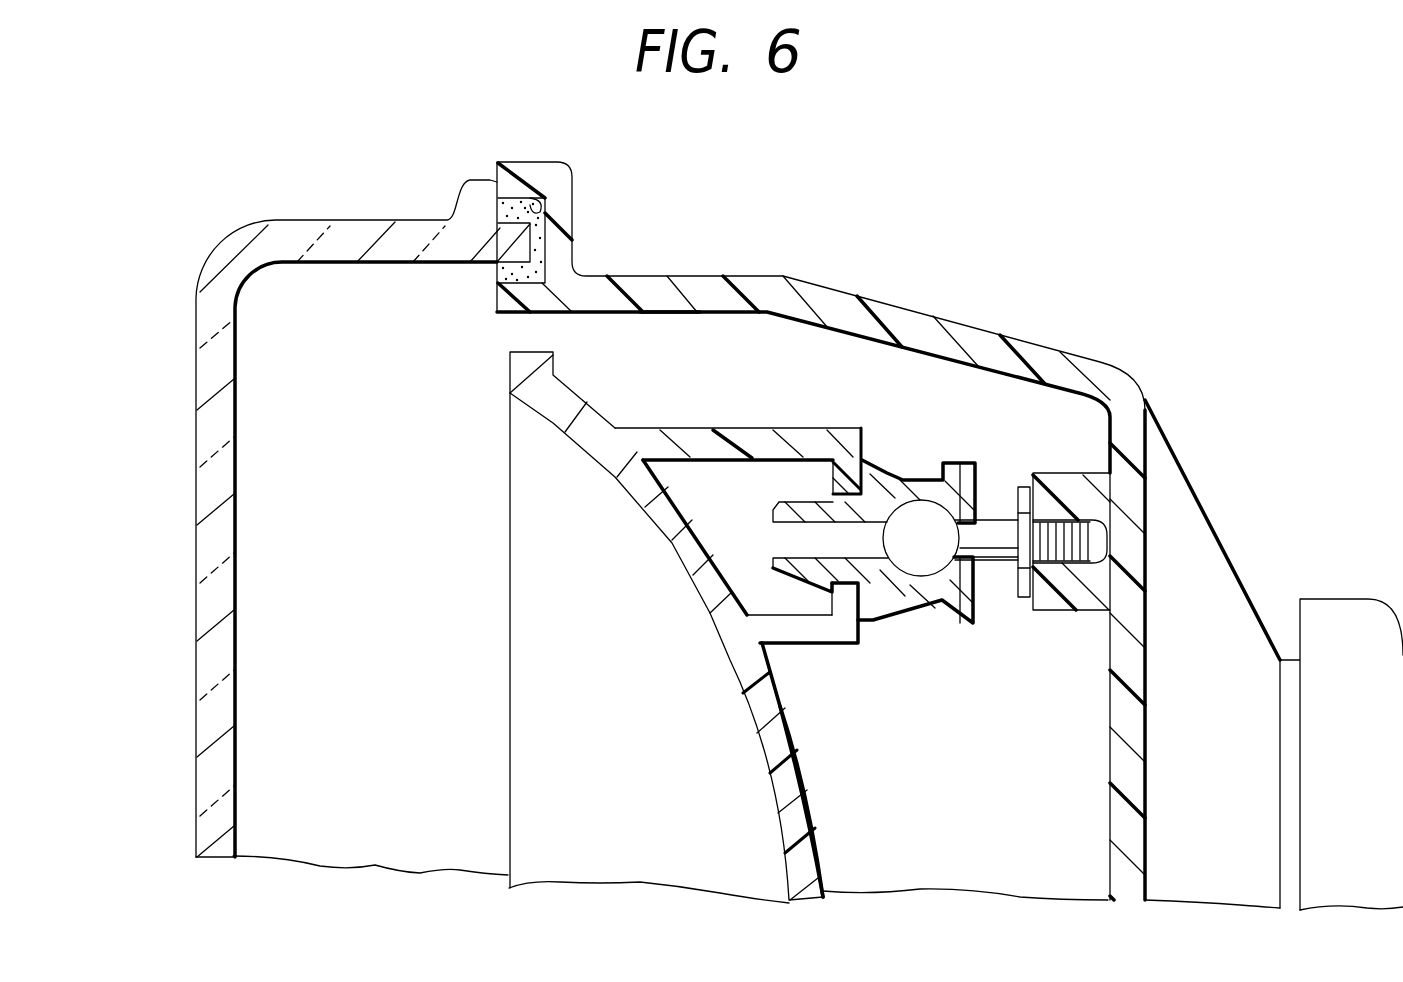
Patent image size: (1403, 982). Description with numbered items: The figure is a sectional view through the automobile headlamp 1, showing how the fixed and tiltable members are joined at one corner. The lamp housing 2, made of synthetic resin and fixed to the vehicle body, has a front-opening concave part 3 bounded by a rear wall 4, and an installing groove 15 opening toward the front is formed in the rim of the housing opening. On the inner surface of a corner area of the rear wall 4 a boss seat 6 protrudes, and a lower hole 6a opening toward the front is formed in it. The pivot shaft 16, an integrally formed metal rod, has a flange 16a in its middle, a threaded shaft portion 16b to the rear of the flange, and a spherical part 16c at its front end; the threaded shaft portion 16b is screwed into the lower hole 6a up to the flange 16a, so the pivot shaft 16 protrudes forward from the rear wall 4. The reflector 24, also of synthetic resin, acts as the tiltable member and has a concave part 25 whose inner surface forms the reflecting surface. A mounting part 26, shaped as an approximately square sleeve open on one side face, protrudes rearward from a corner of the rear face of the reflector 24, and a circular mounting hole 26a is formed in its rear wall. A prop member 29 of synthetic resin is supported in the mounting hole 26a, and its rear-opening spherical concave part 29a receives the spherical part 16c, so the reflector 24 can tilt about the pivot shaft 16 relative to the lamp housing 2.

The automobile headlamp 1 is at (232, 180).
The lamp housing 2 is at (738, 276).
The concave part 3 is at (673, 318).
The rear wall 4 is at (1115, 718).
The boss seat 6 is at (1073, 478).
The lower hole 6a is at (1108, 525).
The installing groove 15 is at (543, 200).
The pivot shaft 16 is at (992, 520).
The flange 16a is at (1026, 490).
The threaded shaft portion 16b is at (1063, 568).
The spherical part 16c is at (923, 508).
The reflector 24 is at (808, 800).
The concave part 25 is at (508, 466).
The mounting part 26 is at (748, 432).
The mounting hole 26a is at (880, 478).
The prop member 29 is at (920, 600).
The concave part 29a is at (914, 560).